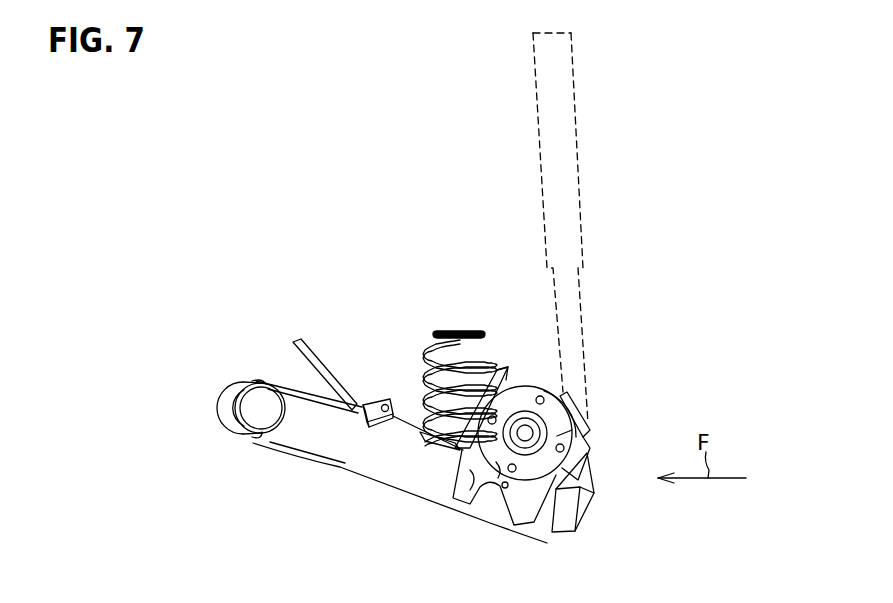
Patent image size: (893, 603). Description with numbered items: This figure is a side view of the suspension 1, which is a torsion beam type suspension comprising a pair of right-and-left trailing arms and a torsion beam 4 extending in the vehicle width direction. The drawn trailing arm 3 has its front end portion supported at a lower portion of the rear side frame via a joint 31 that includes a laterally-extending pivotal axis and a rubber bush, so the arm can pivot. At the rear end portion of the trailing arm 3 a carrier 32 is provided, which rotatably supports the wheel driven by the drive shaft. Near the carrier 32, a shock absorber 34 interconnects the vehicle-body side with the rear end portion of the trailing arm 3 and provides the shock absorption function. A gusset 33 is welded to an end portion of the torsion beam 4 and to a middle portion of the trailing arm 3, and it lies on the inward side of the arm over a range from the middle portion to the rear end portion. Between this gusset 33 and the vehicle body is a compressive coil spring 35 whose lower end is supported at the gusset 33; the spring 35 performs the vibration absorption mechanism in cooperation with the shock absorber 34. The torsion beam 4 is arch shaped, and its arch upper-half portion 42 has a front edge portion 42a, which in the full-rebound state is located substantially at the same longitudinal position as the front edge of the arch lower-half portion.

The suspension 1 is at (316, 148).
The trailing arm 3 is at (457, 515).
The torsion beam 4 is at (305, 338).
The joint 31 is at (238, 430).
The carrier 32 is at (575, 418).
The gusset 33 is at (562, 521).
The shock absorber 34 is at (575, 98).
The compressive coil spring 35 is at (490, 341).
The arch upper-half portion 42 is at (338, 390).
The front edge portion 42a is at (296, 345).